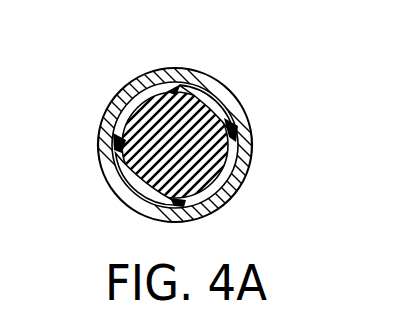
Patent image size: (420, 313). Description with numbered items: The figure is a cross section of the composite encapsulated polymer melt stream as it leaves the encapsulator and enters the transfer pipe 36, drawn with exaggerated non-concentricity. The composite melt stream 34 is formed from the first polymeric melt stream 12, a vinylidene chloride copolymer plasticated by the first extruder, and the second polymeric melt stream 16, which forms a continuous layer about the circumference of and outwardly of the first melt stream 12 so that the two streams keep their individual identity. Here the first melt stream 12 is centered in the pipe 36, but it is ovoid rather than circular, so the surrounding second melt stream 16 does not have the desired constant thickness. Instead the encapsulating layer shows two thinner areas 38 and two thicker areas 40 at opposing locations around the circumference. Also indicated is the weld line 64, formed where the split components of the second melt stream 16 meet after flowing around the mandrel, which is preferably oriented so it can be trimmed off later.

The first polymeric melt stream 12 is at (164, 93).
The second polymeric melt stream 16 is at (210, 102).
The composite melt stream 34 is at (250, 120).
The pipe 36 is at (252, 158).
The thin area 38 is at (152, 90).
The thicker area 40 is at (202, 92).
The weld line 64 is at (118, 157).